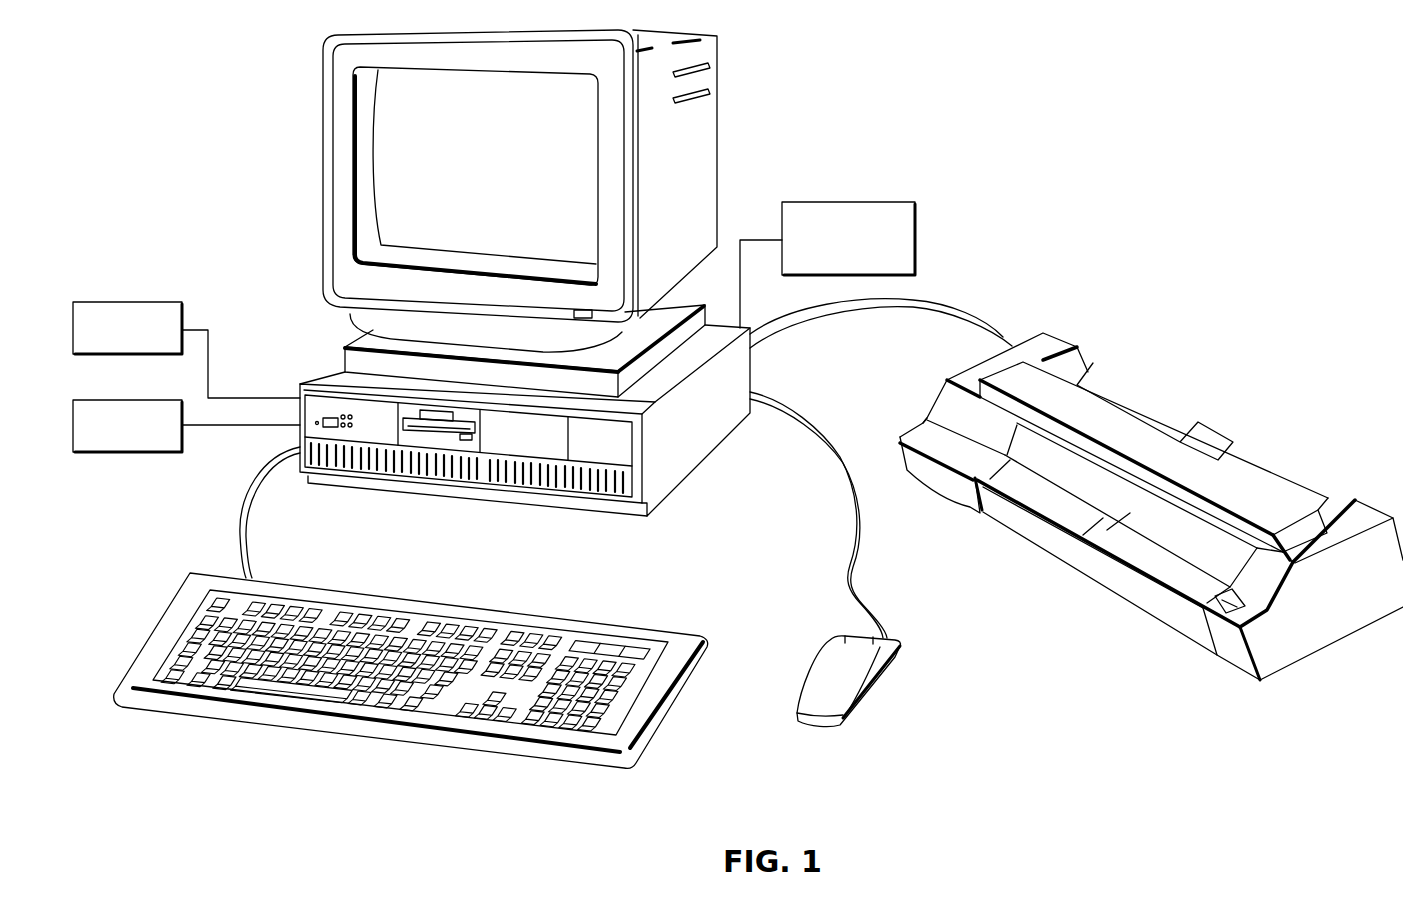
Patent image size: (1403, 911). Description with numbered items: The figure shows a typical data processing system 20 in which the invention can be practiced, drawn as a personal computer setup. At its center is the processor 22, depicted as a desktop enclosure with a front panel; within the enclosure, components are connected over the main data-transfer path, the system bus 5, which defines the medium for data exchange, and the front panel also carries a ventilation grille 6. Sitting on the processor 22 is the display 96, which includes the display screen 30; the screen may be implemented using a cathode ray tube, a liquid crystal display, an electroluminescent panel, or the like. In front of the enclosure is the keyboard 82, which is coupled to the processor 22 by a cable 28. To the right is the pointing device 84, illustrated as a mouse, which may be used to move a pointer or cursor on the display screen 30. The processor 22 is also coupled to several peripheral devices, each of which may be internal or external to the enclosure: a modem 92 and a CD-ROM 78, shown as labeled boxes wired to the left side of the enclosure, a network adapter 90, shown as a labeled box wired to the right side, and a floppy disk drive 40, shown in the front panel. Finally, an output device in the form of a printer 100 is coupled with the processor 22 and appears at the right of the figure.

The data processing system 20 is at (967, 135).
The processor 22 is at (525, 467).
The system bus 5 is at (575, 458).
The ventilation grille 6 is at (563, 485).
The cable 28 is at (242, 502).
The display screen 30 is at (445, 205).
The floppy disk drive 40 is at (438, 432).
The CD-ROM 78 is at (140, 453).
The keyboard 82 is at (353, 748).
The pointing device 84 is at (887, 673).
The network adapter 90 is at (840, 202).
The modem 92 is at (132, 302).
The display 96 is at (453, 191).
The printer 100 is at (1075, 328).